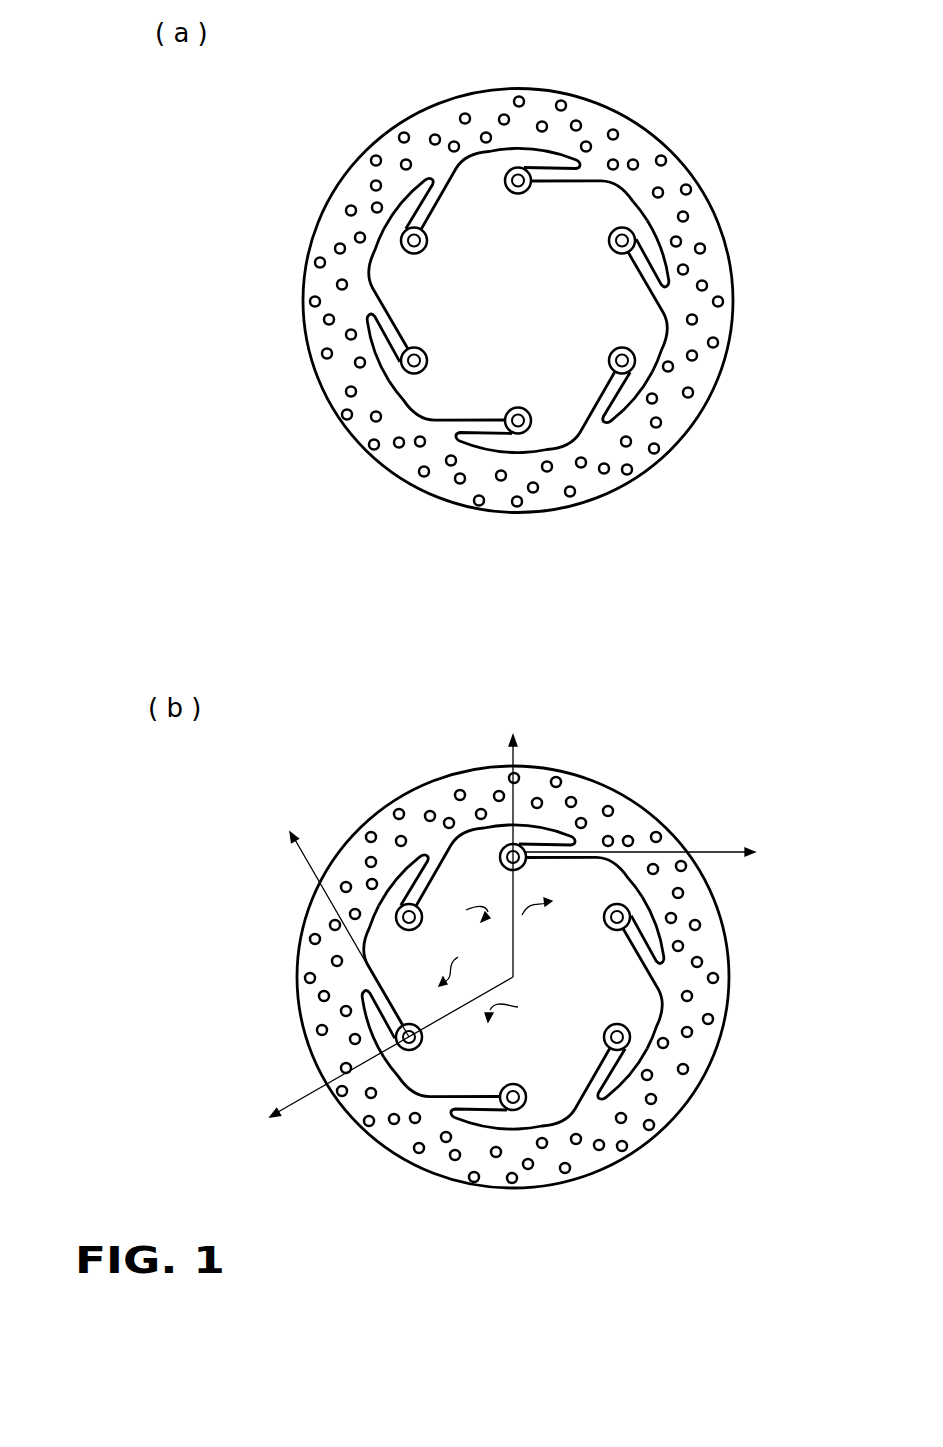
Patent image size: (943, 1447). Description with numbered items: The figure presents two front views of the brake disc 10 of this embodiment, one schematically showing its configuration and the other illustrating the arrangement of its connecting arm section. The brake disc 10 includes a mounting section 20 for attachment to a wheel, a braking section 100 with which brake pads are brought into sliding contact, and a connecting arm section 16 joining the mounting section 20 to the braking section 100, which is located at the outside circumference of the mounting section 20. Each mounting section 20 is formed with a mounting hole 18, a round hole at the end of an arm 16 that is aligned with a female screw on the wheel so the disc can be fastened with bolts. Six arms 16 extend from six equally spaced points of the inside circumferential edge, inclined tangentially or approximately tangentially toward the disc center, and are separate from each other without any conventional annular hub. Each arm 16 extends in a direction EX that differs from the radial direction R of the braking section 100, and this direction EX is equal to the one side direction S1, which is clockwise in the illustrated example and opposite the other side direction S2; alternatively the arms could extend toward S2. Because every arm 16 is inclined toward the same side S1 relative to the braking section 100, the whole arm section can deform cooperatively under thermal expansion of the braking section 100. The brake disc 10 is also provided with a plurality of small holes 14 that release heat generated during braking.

The brake disc 10 is at (515, 599).
The small holes 14 is at (551, 622).
The connecting arm 16 is at (511, 589).
The mounting hole 18 is at (461, 679).
The mounting section 20 is at (516, 584).
The braking section 100 is at (502, 638).
The radial direction R is at (380, 909).
The extension direction EX is at (479, 909).
The one side direction S1 is at (500, 942).
The other side direction S2 is at (492, 962).